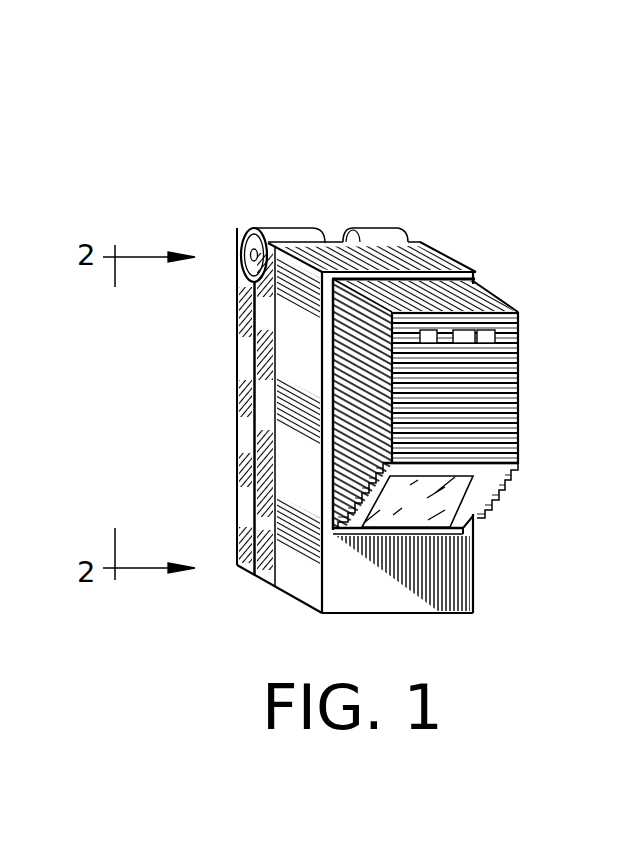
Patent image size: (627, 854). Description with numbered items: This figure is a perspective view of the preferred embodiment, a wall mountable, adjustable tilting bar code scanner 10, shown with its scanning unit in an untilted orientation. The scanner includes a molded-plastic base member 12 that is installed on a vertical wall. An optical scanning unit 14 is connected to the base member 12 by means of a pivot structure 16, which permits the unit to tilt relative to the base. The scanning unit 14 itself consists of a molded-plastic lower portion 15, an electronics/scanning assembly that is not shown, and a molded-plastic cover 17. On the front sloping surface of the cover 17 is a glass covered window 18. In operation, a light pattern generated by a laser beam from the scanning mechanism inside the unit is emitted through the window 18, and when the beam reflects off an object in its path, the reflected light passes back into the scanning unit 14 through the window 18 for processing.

The adjustable tilting bar code scanner 10 is at (310, 170).
The base member 12 is at (238, 368).
The optical scanning unit 14 is at (488, 249).
The lower portion 15 is at (264, 567).
The pivot structure 16 is at (236, 218).
The cover 17 is at (408, 250).
The window 18 is at (445, 495).